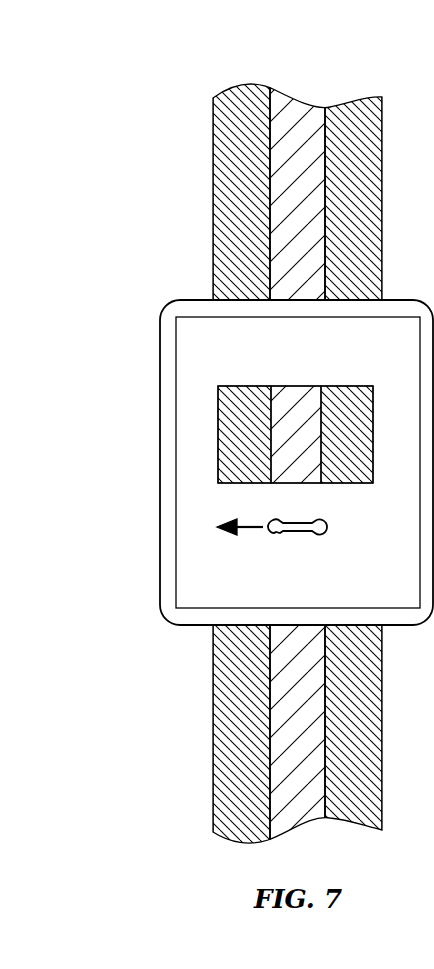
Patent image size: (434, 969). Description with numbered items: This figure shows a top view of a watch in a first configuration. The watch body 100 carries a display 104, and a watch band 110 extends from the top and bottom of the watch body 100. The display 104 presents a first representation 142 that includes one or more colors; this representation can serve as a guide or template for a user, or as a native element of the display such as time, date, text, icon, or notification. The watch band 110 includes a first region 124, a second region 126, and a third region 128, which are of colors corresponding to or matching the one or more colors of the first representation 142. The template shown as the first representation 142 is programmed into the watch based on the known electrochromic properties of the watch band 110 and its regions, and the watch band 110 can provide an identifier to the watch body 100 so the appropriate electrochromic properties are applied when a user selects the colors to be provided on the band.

The watch body 100 is at (160, 465).
The display 104 is at (198, 349).
The watch band 110 is at (214, 212).
The first region 124 is at (228, 98).
The second region 126 is at (293, 108).
The third region 128 is at (343, 115).
The first representation 142 is at (343, 386).